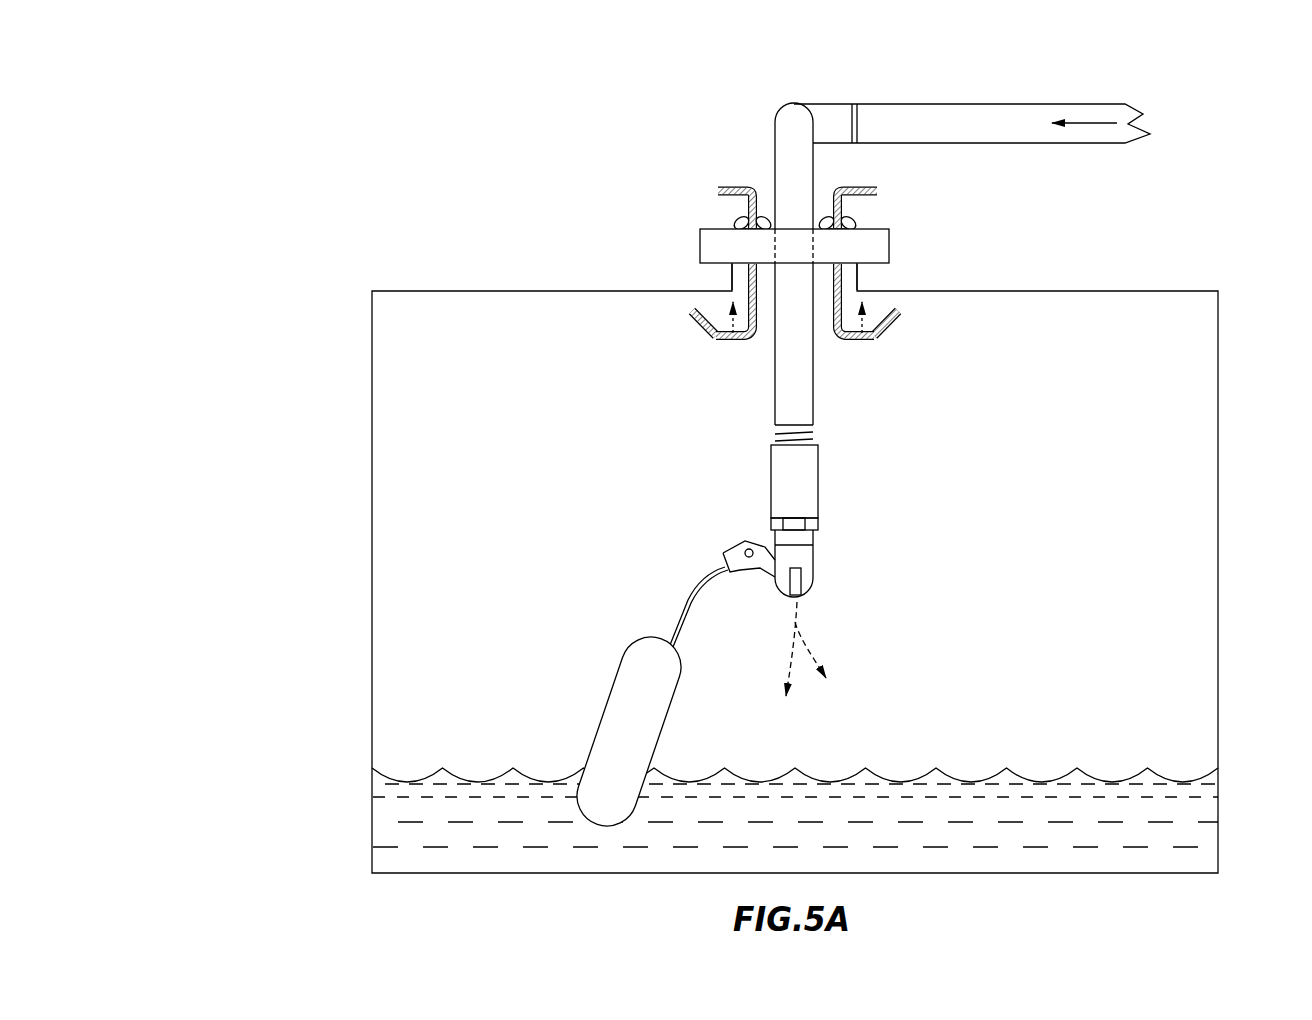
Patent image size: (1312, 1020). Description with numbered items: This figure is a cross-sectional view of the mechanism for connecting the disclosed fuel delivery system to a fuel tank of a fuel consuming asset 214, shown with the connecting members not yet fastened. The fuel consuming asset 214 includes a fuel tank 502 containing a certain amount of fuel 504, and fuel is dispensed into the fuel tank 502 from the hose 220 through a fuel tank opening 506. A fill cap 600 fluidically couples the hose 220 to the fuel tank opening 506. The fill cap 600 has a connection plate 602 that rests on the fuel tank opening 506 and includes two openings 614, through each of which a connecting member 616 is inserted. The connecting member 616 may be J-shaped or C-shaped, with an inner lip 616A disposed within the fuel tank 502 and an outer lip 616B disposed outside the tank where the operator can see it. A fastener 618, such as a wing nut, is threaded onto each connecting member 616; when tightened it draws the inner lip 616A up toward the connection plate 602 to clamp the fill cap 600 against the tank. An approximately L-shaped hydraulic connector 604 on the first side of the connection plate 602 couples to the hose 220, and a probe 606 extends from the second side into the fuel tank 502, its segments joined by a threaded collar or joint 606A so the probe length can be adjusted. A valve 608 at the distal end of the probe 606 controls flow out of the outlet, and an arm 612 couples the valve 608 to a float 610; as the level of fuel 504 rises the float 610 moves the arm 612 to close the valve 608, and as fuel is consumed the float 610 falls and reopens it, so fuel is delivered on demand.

The fuel consuming asset 214 is at (300, 663).
The hose 220 is at (1109, 144).
The fuel tank 502 is at (1219, 331).
The fuel 504 is at (400, 831).
The fuel tank opening 506 is at (726, 282).
The fill cap 600 is at (712, 220).
The connection plate 602 is at (696, 244).
The hydraulic connector 604 is at (787, 98).
The probe 606 is at (768, 485).
The threaded collar or joint 606A is at (822, 438).
The valve 608 is at (818, 560).
The float 610 is at (616, 706).
The arm 612 is at (688, 604).
The opening 614 is at (737, 224).
The connecting member 616 is at (829, 327).
The inner lip 616A is at (978, 332).
The outer lip 616B is at (716, 190).
The fastener 618 is at (764, 220).